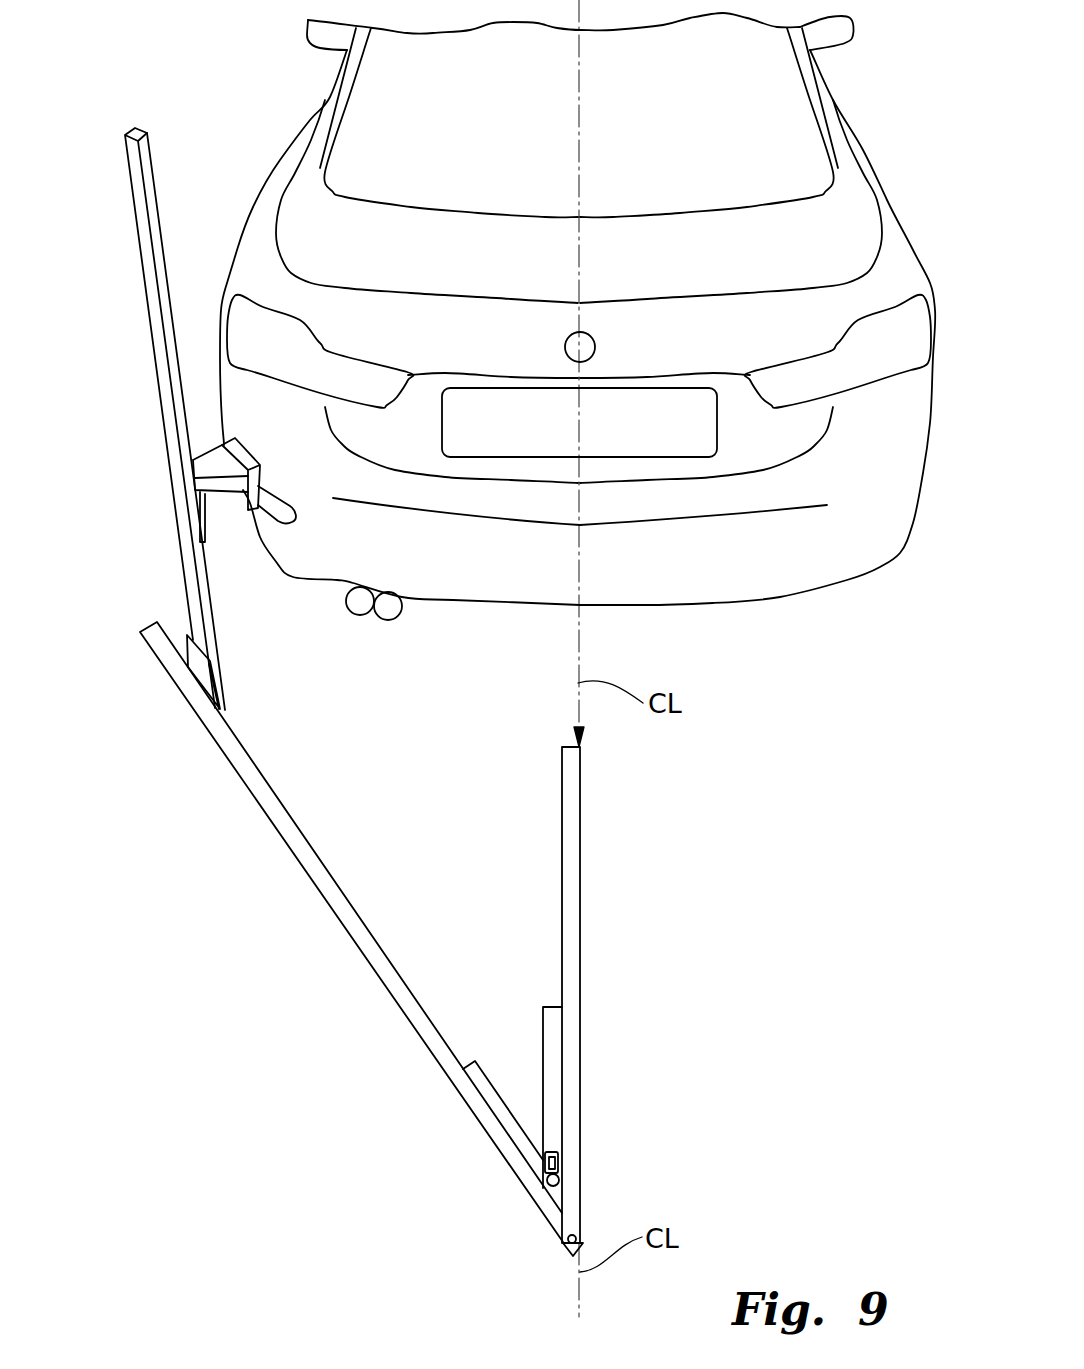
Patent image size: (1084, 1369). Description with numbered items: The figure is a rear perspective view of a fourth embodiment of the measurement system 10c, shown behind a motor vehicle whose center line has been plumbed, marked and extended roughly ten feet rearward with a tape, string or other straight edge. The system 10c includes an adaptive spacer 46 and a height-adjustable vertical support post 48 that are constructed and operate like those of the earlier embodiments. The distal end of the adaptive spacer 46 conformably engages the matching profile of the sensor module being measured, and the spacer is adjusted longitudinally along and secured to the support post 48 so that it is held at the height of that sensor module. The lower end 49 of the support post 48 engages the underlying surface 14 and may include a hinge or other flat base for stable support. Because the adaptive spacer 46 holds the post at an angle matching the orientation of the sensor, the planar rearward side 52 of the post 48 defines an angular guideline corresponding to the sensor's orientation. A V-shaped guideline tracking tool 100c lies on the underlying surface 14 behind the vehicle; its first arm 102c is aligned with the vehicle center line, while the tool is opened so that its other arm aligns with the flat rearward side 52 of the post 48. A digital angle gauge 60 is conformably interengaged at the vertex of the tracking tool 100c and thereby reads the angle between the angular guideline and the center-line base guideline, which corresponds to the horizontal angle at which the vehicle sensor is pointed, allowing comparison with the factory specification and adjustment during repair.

The measurement system 10c is at (346, 939).
The underlying surface 14 is at (142, 838).
The adaptive spacer 46 is at (208, 450).
The vertical support post 48 is at (152, 346).
The lower end of vertical support element 49 is at (218, 710).
The planar rearward side 52 is at (164, 390).
The digital angle gauge 60 is at (498, 1080).
The V-shaped guideline tracking tool 100c is at (350, 937).
The first arm 102c is at (562, 808).